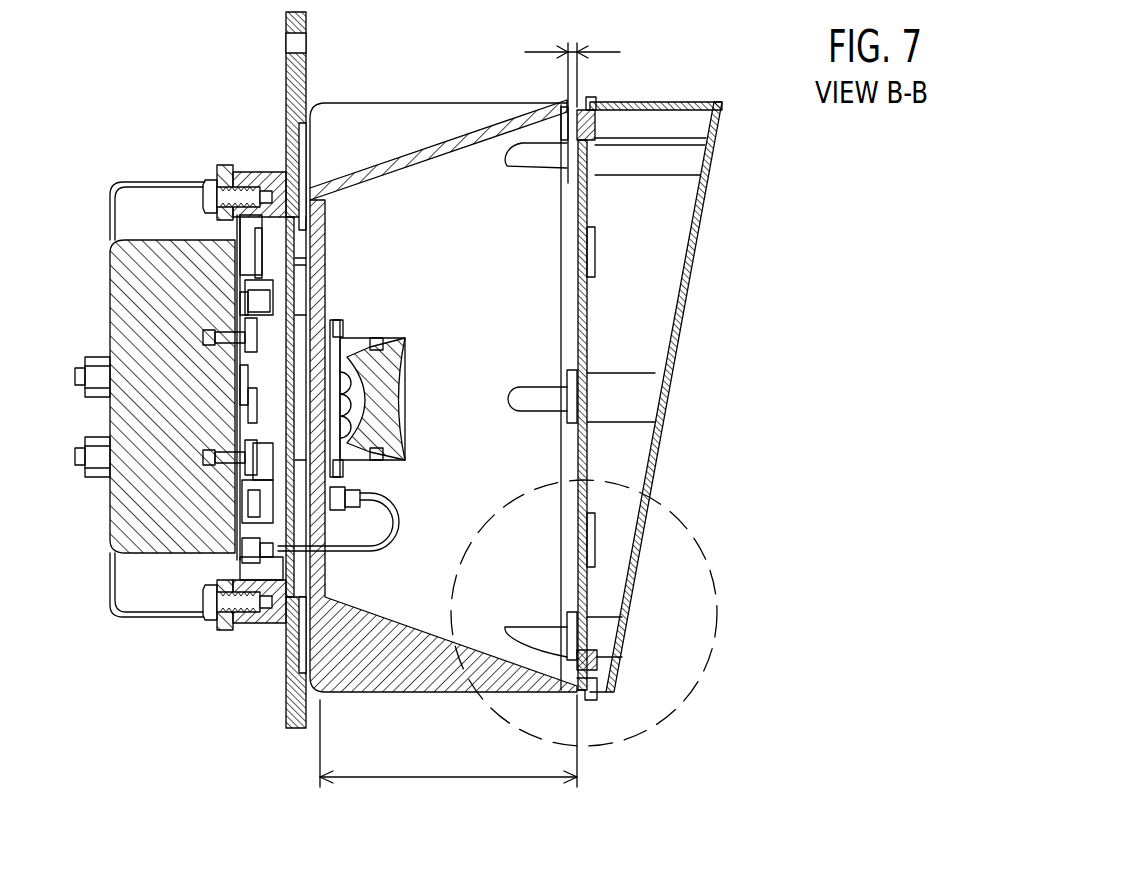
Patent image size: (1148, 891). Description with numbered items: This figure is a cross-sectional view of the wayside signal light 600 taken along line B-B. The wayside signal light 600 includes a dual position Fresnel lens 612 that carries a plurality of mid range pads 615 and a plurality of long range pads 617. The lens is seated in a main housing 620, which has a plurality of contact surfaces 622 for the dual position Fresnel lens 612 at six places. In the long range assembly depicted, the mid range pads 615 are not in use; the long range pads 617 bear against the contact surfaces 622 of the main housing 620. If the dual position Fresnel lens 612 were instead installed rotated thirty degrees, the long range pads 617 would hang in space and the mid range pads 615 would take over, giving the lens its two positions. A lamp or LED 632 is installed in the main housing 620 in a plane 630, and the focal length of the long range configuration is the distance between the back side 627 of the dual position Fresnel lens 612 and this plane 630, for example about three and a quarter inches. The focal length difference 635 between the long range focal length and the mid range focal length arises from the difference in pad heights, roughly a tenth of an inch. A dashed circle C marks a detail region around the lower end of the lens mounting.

The wayside signal light 600 is at (181, 71).
The main housing 620 is at (378, 115).
The focal length difference 635 is at (538, 50).
The long range pads 617 is at (608, 124).
The contact surfaces 622 is at (557, 153).
The mid range pads 615 is at (602, 257).
The dual position Fresnel lens 612 is at (594, 336).
The LED 632 is at (405, 390).
The plane 630 is at (320, 757).
The back side 627 is at (577, 757).
The detail view circle C is at (705, 563).